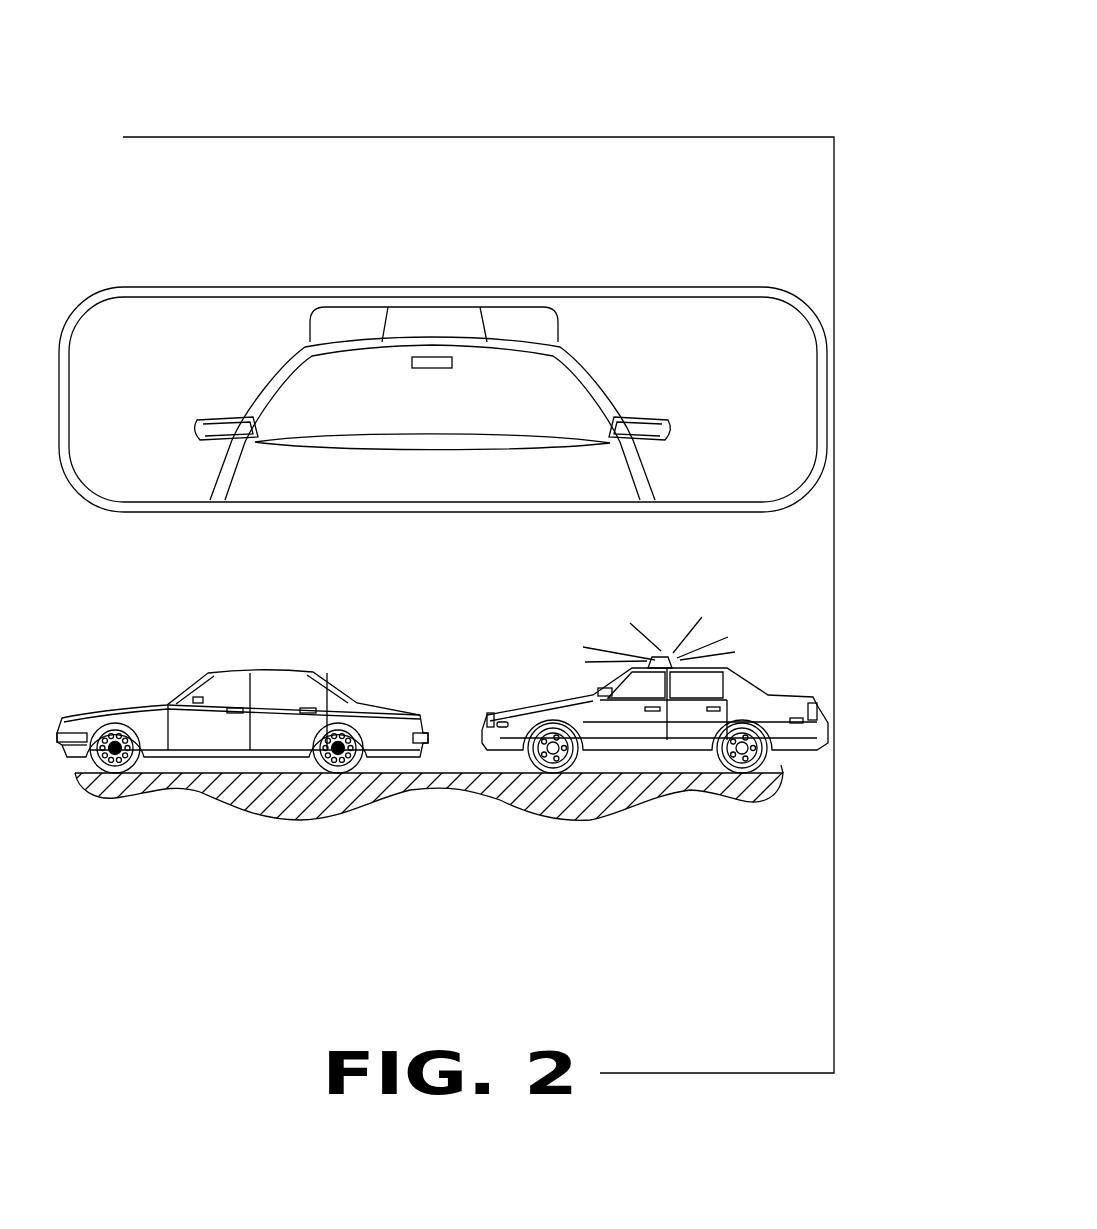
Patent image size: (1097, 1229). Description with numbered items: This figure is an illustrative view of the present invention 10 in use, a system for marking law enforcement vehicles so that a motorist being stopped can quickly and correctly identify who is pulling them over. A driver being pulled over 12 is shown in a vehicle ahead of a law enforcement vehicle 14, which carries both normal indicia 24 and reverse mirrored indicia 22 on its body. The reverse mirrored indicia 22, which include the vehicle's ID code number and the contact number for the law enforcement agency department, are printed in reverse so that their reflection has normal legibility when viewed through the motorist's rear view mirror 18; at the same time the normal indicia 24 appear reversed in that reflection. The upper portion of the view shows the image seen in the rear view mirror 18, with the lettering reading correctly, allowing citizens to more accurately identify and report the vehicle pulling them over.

The present invention 10 is at (478, 541).
The driver being pulled over 12 is at (120, 713).
The law enforcement vehicle 14 is at (747, 700).
The rear view mirror 18 is at (187, 358).
The reverse mirrored indicia 22 is at (553, 375).
The normal indicia 24 is at (313, 375).